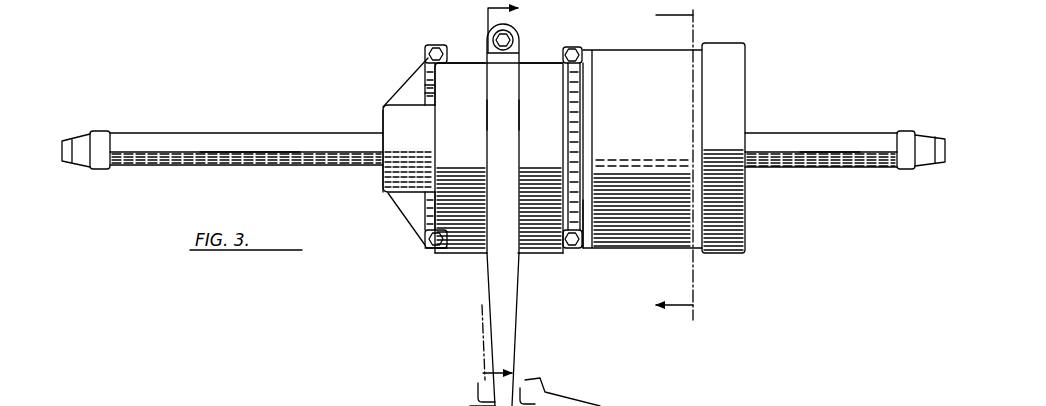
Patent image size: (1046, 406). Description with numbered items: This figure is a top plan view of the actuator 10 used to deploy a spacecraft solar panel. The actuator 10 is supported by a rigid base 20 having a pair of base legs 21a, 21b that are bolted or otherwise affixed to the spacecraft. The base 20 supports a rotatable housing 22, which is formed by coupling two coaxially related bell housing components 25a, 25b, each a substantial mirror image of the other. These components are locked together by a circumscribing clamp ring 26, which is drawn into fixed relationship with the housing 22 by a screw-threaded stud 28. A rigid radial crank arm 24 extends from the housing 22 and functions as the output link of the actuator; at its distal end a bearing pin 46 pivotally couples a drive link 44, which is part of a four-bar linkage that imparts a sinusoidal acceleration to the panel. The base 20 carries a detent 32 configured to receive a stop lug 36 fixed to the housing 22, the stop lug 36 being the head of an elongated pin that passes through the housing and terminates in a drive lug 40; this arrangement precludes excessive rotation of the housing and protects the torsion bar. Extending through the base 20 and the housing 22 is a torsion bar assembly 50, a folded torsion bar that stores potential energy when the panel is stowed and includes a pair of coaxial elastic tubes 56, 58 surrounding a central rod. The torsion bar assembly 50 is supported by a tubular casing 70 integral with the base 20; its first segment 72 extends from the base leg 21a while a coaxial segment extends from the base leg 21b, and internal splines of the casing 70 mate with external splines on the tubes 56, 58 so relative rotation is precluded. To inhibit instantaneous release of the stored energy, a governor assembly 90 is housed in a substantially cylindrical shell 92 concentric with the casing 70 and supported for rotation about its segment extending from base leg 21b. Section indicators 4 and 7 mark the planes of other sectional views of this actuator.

The actuator 10 is at (392, 72).
The base 20 is at (426, 254).
The base leg 21a is at (430, 45).
The base leg 21b is at (572, 47).
The rotatable housing 22 is at (466, 78).
The radial crank arm 24 is at (505, 292).
The bell housing component 25a is at (468, 228).
The bell housing component 25b is at (555, 228).
The clamp ring 26 is at (503, 105).
The screw-threaded stud 28 is at (508, 30).
The detent 32 is at (428, 91).
The stop lug 36 is at (426, 206).
The drive lug 40 is at (602, 238).
The drive link 44 is at (520, 388).
The bearing pin 46 is at (478, 383).
The torsion bar assembly 50 is at (285, 128).
The tube 56 is at (233, 152).
The tube 58 is at (826, 153).
The tubular casing 70 is at (381, 183).
The first casing segment 72 is at (395, 116).
The governor assembly 90 is at (677, 258).
The shell 92 is at (642, 149).
The section line 4 is at (494, 186).
The section line 7 is at (682, 162).